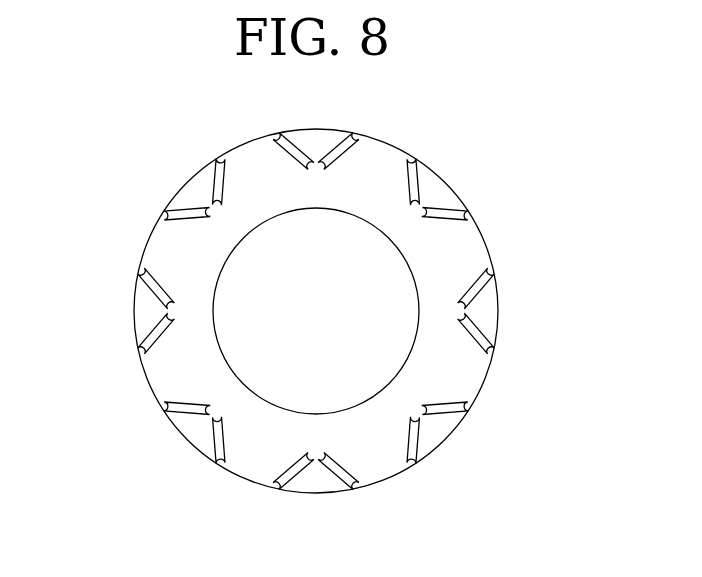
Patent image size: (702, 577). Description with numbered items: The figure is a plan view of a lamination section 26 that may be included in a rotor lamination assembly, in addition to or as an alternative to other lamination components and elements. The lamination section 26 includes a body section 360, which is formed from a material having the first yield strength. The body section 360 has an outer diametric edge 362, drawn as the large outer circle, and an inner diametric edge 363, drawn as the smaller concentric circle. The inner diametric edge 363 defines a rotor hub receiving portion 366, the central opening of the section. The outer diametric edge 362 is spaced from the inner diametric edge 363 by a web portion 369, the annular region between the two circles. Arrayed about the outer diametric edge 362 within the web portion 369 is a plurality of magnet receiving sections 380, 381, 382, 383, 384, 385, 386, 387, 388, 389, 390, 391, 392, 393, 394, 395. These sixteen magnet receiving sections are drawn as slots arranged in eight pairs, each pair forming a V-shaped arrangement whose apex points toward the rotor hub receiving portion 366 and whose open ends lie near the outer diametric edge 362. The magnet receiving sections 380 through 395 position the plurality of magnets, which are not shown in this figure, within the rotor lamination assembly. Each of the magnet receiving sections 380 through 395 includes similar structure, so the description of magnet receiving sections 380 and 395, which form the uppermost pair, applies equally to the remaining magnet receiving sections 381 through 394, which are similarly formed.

The lamination section 26 is at (478, 504).
The body section 360 is at (506, 380).
The outer diametric edge 362 is at (246, 477).
The inner diametric edge 363 is at (218, 282).
The rotor hub receiving portion 366 is at (372, 312).
The web portion 369 is at (257, 172).
The magnet receiving section 380 is at (358, 162).
The magnet receiving section 381 is at (402, 167).
The magnet receiving section 382 is at (447, 212).
The magnet receiving section 383 is at (479, 279).
The magnet receiving section 384 is at (483, 331).
The magnet receiving section 385 is at (460, 403).
The magnet receiving section 386 is at (418, 438).
The magnet receiving section 387 is at (340, 454).
The magnet receiving section 388 is at (297, 474).
The magnet receiving section 389 is at (229, 433).
The magnet receiving section 390 is at (188, 414).
The magnet receiving section 391 is at (157, 349).
The magnet receiving section 392 is at (150, 286).
The magnet receiving section 393 is at (192, 222).
The magnet receiving section 394 is at (218, 182).
The magnet receiving section 395 is at (301, 148).